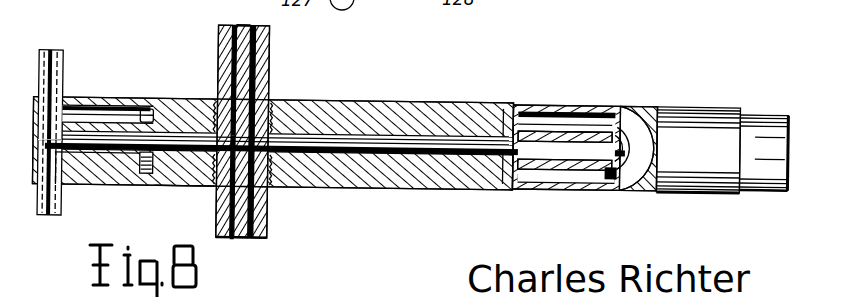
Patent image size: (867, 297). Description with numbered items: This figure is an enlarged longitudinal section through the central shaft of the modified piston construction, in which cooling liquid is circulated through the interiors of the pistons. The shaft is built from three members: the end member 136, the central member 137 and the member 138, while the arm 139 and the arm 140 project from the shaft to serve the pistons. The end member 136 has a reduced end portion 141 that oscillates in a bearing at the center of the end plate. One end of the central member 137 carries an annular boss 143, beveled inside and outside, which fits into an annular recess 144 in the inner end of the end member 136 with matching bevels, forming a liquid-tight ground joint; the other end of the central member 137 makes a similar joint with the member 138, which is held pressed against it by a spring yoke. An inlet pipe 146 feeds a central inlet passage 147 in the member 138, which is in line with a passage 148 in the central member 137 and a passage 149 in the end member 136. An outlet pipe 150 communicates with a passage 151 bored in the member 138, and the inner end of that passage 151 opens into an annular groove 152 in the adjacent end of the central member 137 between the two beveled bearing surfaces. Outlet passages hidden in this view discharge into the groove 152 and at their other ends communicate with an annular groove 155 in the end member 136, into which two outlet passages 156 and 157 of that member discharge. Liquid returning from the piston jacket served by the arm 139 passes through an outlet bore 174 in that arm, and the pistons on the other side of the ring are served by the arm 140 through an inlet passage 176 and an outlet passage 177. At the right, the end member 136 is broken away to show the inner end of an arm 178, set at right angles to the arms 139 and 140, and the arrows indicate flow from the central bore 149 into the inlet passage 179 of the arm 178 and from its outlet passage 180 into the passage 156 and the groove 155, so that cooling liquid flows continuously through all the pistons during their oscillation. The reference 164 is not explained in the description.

The end member 136 is at (708, 118).
The central member 137 is at (373, 100).
The shaft member 138 is at (78, 103).
The arm 139 is at (263, 53).
The arm 140 is at (268, 212).
The reduced end portion 141 is at (762, 120).
The annular boss 143 is at (500, 104).
The annular recess 144 is at (140, 104).
The inlet pipe 146 is at (62, 210).
The central inlet passage 147 is at (80, 160).
The passage 148 is at (344, 150).
The passage 149 is at (542, 113).
The outlet pipe 150 is at (62, 56).
The passage 151 is at (117, 101).
The annular groove 152 is at (168, 180).
The annular groove 155 is at (548, 105).
The outlet passage 156 is at (600, 128).
The outlet passage 157 is at (582, 186).
The clamp screw head 164 is at (247, 24).
The outlet bore 174 is at (232, 43).
The inlet passage 176 is at (232, 240).
The outlet passage 177 is at (268, 238).
The arm 178 is at (655, 153).
The inlet passage 179 is at (640, 107).
The outlet passage 180 is at (624, 172).